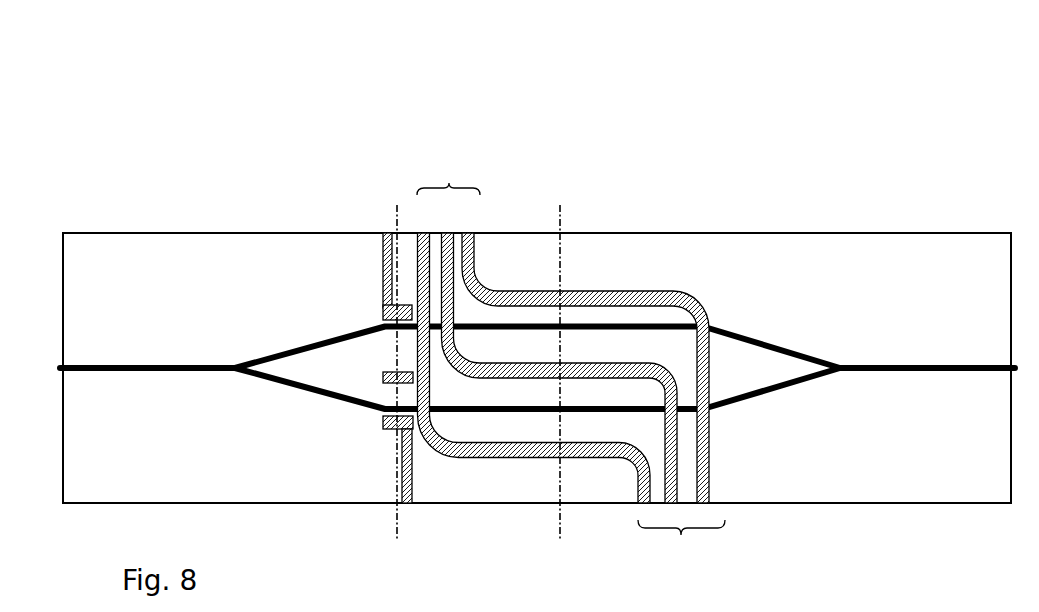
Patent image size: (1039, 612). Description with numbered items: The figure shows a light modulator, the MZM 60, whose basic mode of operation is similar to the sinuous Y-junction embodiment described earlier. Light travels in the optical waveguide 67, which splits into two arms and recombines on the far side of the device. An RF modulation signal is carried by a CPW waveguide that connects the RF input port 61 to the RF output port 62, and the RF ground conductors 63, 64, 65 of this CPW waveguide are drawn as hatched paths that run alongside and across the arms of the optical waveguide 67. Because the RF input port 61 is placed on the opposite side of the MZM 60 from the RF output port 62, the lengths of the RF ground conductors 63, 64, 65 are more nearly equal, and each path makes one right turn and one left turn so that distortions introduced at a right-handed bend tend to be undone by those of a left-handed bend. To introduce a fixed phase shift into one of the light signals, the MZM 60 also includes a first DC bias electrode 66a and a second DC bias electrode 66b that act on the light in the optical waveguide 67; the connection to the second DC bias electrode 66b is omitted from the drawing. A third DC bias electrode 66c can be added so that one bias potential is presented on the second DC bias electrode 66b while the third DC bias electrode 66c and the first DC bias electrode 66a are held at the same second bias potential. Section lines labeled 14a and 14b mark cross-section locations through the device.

The MZM 60 is at (62, 78).
The RF input port 61 is at (448, 171).
The RF output port 62 is at (681, 549).
The RF ground conductor 63 is at (600, 290).
The RF ground conductor 64 is at (538, 370).
The RF ground conductor 65 is at (490, 455).
The first DC bias electrode 66a is at (388, 433).
The second DC bias electrode 66b is at (385, 373).
The third DC bias electrode 66c is at (383, 312).
The optical waveguide 67 is at (297, 392).
The section line 14a is at (396, 213).
The section line 14b is at (559, 213).